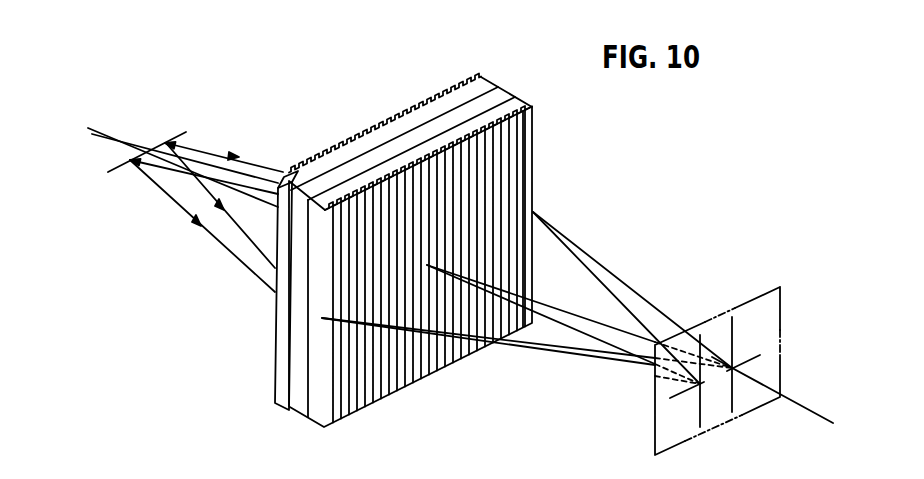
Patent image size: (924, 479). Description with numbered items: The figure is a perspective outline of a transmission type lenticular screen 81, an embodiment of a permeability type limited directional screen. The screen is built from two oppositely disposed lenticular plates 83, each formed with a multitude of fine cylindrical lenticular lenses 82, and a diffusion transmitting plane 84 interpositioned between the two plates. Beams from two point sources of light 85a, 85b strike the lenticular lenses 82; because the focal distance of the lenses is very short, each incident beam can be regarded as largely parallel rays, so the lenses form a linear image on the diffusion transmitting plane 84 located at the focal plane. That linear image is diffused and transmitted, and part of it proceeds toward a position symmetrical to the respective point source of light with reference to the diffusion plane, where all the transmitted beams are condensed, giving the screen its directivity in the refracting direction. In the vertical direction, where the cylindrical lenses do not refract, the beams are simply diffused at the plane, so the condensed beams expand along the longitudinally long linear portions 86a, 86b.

The transmission type lenticular screen 81 is at (432, 232).
The cylindrical lenticular lenses 82 is at (477, 80).
The lenticular plates 83 is at (457, 98).
The diffusion transmitting plane 84 is at (278, 236).
The point source of light 85a is at (187, 192).
The point source of light 85b is at (182, 210).
The longitudinally long linear portion 86a is at (733, 318).
The longitudinally long linear portion 86b is at (702, 335).